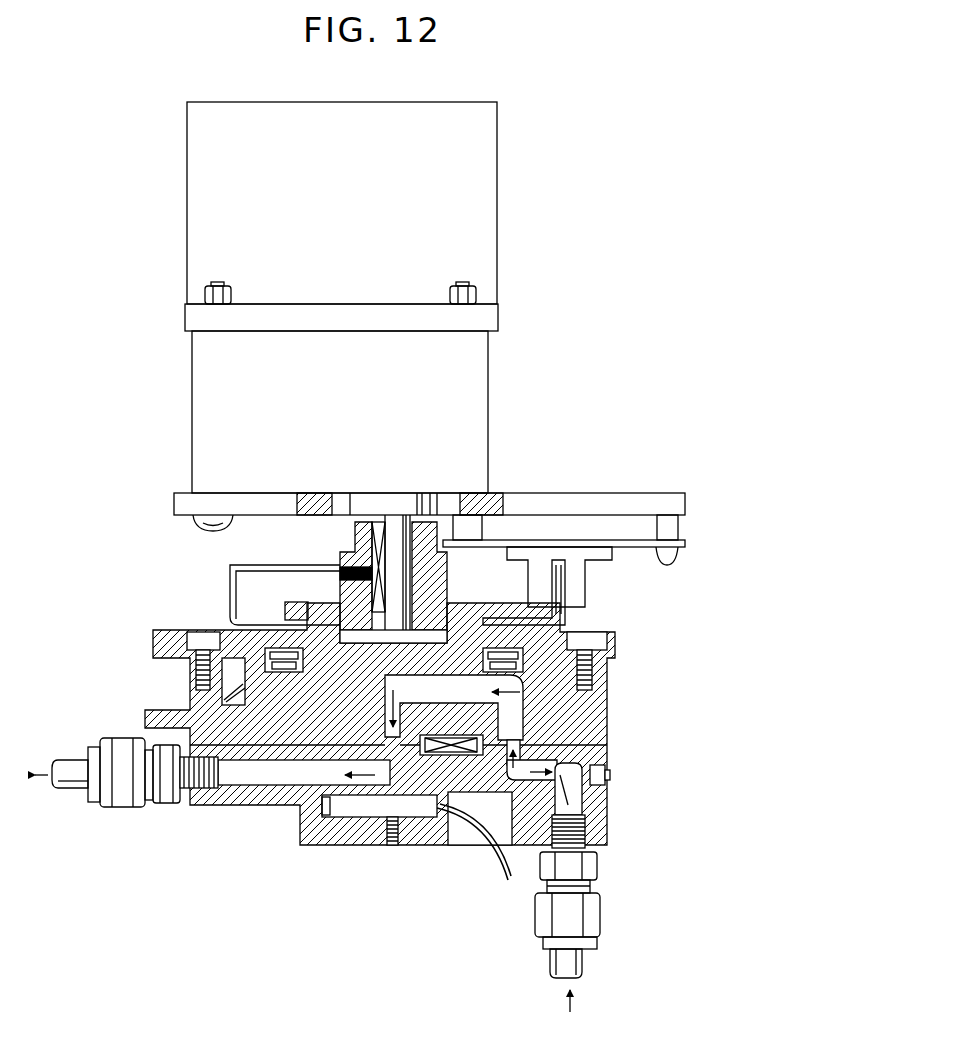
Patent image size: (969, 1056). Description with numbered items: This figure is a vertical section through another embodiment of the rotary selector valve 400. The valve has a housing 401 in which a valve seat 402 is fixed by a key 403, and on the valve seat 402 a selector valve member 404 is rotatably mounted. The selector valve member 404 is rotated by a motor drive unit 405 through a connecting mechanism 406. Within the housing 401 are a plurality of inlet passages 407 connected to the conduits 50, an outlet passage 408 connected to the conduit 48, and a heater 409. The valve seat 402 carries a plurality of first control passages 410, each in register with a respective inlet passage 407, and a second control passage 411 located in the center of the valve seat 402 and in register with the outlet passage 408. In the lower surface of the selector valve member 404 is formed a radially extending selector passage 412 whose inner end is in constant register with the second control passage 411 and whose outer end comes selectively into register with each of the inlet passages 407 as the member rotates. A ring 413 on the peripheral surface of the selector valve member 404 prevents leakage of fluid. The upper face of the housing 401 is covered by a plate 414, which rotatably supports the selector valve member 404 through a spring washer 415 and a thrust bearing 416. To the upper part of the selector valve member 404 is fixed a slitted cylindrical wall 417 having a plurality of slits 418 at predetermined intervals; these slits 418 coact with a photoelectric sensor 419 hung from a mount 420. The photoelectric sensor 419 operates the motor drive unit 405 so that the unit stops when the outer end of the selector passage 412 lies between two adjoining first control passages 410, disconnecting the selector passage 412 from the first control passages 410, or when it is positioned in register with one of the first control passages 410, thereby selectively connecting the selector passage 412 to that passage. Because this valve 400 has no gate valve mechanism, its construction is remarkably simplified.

The rotary selector valve 400 is at (542, 238).
The motor drive unit 405 is at (355, 405).
The connecting mechanism 406 is at (396, 525).
The mount 420 is at (612, 494).
The photoelectric sensor 419 is at (575, 576).
The slits 418 is at (560, 598).
The housing 401 is at (580, 705).
The ring 413 is at (235, 697).
The plate 414 is at (555, 636).
The slitted cylindrical wall 417 is at (230, 608).
The selector valve member 404 is at (323, 655).
The thrust bearing 416 is at (332, 702).
The spring washer 415 is at (510, 650).
The selector passage 412 is at (460, 690).
The second control passage 411 is at (497, 703).
The first control passages 410 is at (520, 710).
The key 403 is at (455, 753).
The valve seat 402 is at (268, 740).
The outlet passage 408 is at (338, 778).
The heater 409 is at (415, 815).
The inlet passages 407 is at (535, 768).
The conduits 50 is at (585, 962).
The conduit 48 is at (73, 790).